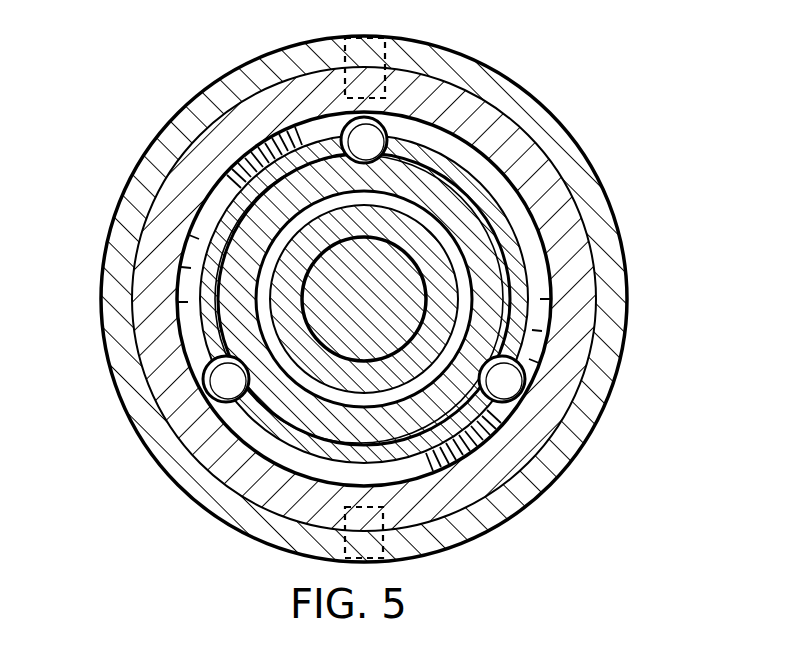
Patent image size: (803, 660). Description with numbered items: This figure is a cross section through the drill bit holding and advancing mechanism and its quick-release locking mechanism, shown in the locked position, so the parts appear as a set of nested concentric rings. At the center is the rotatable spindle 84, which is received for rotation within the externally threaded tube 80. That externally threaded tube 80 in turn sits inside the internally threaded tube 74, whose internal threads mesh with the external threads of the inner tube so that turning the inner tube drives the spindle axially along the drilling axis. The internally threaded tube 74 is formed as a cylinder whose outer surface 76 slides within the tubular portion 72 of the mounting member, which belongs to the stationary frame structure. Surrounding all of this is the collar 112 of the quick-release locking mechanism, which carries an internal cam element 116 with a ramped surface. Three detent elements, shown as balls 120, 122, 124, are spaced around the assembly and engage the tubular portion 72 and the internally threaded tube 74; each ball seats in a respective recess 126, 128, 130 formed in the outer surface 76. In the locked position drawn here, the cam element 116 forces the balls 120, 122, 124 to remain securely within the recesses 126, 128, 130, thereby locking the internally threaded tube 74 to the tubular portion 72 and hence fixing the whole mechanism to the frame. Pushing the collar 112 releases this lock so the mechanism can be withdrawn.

The tubular portion 72 is at (543, 184).
The internally threaded tube 74 is at (490, 270).
The outer surface 76 is at (525, 300).
The externally threaded tube 80 is at (318, 240).
The rotatable spindle 84 is at (365, 333).
The collar 112 is at (455, 73).
The internal cam element 116 is at (521, 130).
The detent element 120 is at (350, 128).
The detent element 122 is at (583, 440).
The detent element 124 is at (170, 405).
The recess 126 is at (292, 158).
The recess 128 is at (525, 379).
The recess 130 is at (204, 378).